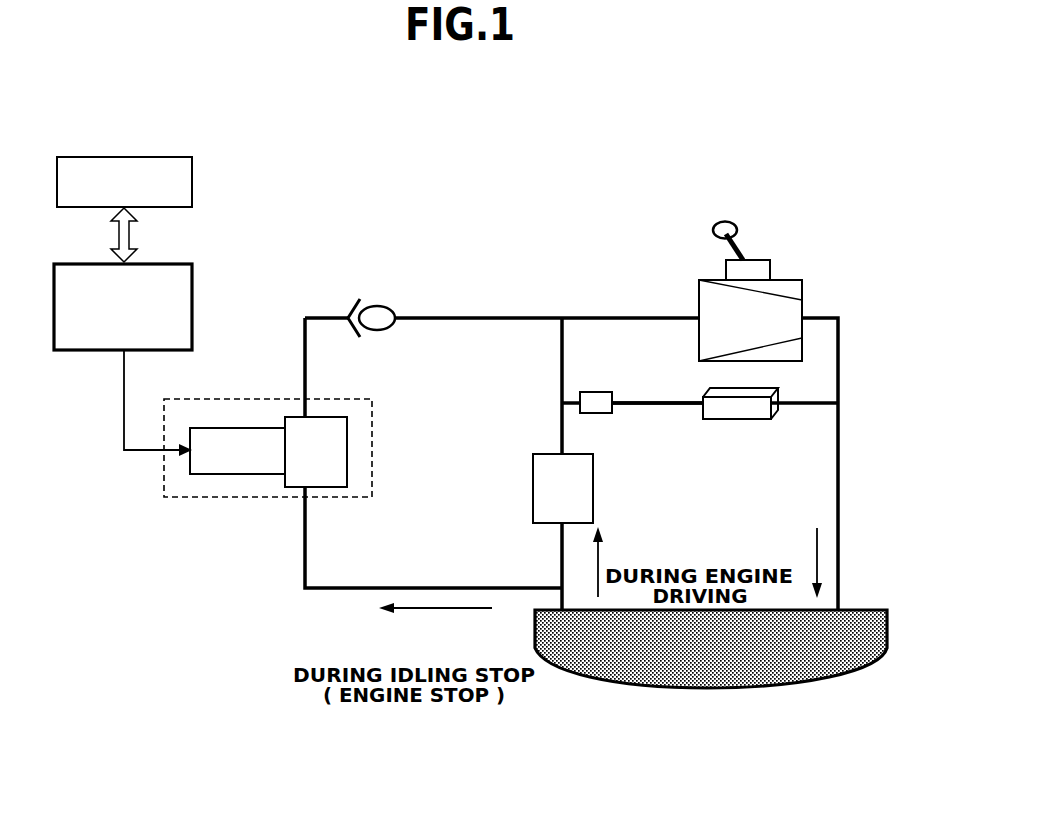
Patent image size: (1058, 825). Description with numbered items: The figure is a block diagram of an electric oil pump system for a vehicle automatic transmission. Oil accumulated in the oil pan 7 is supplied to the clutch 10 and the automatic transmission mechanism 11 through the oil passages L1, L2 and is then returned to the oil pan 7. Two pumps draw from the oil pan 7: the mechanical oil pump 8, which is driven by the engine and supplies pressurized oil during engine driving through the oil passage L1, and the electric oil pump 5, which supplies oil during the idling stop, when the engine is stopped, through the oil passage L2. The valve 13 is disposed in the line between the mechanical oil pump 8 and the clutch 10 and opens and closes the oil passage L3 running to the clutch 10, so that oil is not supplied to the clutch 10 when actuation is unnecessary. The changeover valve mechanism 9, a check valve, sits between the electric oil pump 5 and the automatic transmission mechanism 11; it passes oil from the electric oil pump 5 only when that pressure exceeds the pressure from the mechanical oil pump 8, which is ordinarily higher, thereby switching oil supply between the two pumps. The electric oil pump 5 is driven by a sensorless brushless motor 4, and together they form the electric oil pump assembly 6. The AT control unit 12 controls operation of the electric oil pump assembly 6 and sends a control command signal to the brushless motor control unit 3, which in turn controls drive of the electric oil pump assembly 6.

The brushless motor control unit 3 is at (153, 264).
The brushless motor 4 is at (240, 428).
The electric oil pump 5 is at (338, 442).
The electric oil pump assembly 6 is at (372, 462).
The oil pan 7 is at (708, 665).
The mechanical oil pump 8 is at (582, 482).
The changeover valve mechanism 9 is at (378, 305).
The clutch 10 is at (733, 422).
The automatic transmission mechanism 11 is at (785, 280).
The AT control unit 12 is at (143, 157).
The valve 13 is at (596, 392).
The oil passage L1 is at (600, 557).
The oil passage L2 is at (435, 612).
The oil passage L3 is at (660, 400).